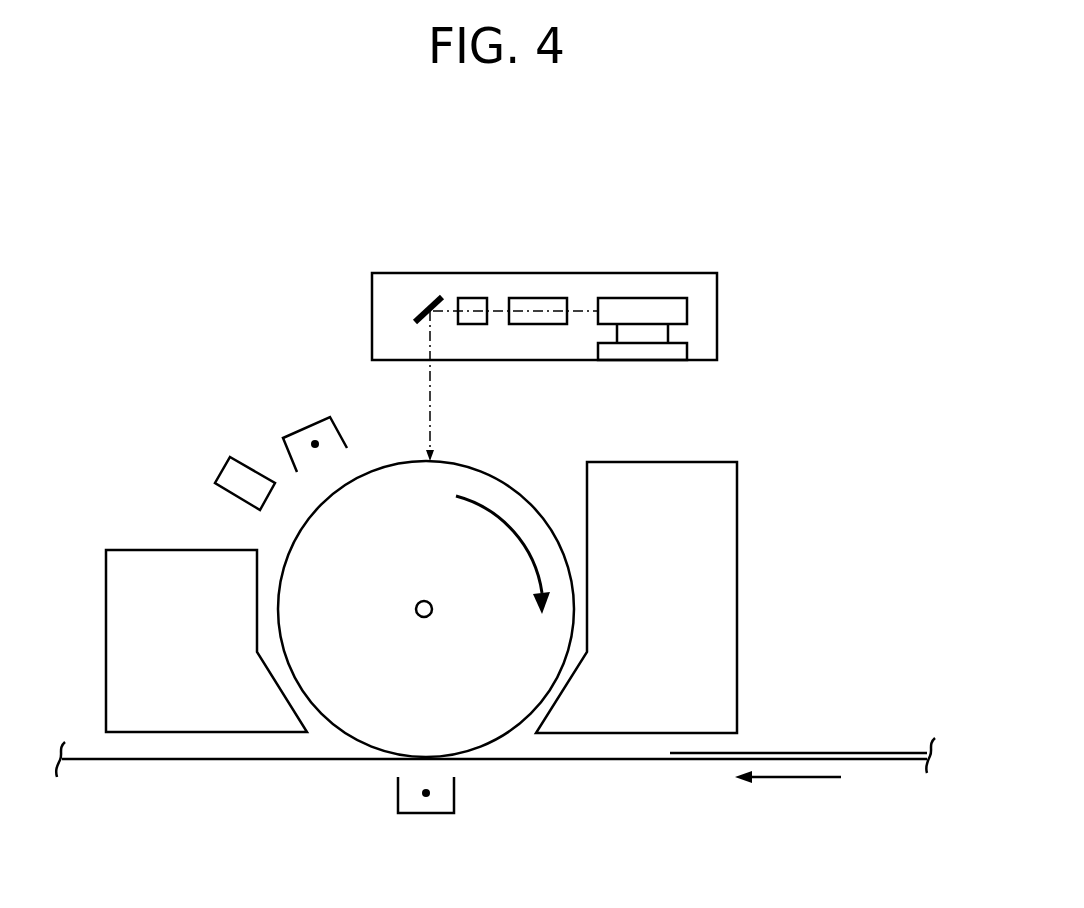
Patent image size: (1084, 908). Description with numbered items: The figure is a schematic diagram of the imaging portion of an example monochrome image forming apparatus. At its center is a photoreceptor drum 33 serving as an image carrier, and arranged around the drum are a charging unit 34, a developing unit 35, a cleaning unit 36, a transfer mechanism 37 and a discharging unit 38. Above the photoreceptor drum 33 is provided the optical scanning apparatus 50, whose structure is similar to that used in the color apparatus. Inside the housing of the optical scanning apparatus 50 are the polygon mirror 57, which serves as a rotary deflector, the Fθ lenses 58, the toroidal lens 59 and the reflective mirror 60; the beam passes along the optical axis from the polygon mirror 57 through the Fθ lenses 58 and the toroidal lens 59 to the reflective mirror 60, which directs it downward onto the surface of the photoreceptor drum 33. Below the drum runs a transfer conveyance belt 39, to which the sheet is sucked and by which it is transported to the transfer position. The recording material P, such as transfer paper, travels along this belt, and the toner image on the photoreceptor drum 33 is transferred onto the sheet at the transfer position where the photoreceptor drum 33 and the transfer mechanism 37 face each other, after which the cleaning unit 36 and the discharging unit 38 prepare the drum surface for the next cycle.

The photoreceptor drum 33 is at (523, 497).
The charging unit 34 is at (310, 423).
The developing unit 35 is at (737, 532).
The cleaning unit 36 is at (140, 550).
The transfer mechanism 37 is at (454, 795).
The discharging unit 38 is at (222, 468).
The transfer conveyance belt 39 is at (197, 760).
The optical scanning apparatus 50 is at (372, 285).
The polygon mirror 57 is at (687, 311).
The Fθ lenses 58 is at (545, 298).
The toroidal lens 59 is at (473, 298).
The reflective mirror 60 is at (427, 305).
The recording material P is at (818, 752).